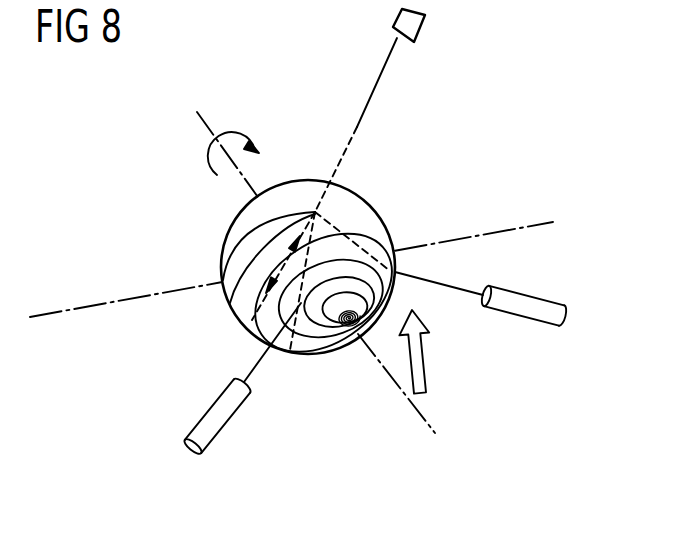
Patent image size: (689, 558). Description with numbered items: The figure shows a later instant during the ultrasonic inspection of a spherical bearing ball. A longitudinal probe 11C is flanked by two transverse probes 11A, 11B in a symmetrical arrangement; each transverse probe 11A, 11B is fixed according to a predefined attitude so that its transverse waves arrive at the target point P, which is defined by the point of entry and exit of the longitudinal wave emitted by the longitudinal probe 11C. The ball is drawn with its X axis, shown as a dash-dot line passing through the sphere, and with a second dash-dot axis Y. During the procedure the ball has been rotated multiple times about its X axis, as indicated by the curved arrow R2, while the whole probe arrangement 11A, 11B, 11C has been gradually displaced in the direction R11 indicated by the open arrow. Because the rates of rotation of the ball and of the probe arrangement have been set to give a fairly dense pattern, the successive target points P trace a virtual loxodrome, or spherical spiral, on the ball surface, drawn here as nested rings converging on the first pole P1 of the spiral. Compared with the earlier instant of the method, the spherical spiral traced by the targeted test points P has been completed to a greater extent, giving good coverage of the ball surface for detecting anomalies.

The transverse probe 11A is at (544, 310).
The transverse probe 11B is at (216, 405).
The longitudinal probe 11C is at (415, 25).
The target point P is at (317, 208).
The first pole P1 is at (344, 328).
The rotation of ball R2 is at (203, 156).
The displacement direction of probe arrangement R11 is at (420, 377).
The X axis X is at (423, 421).
The Y axis Y is at (527, 222).